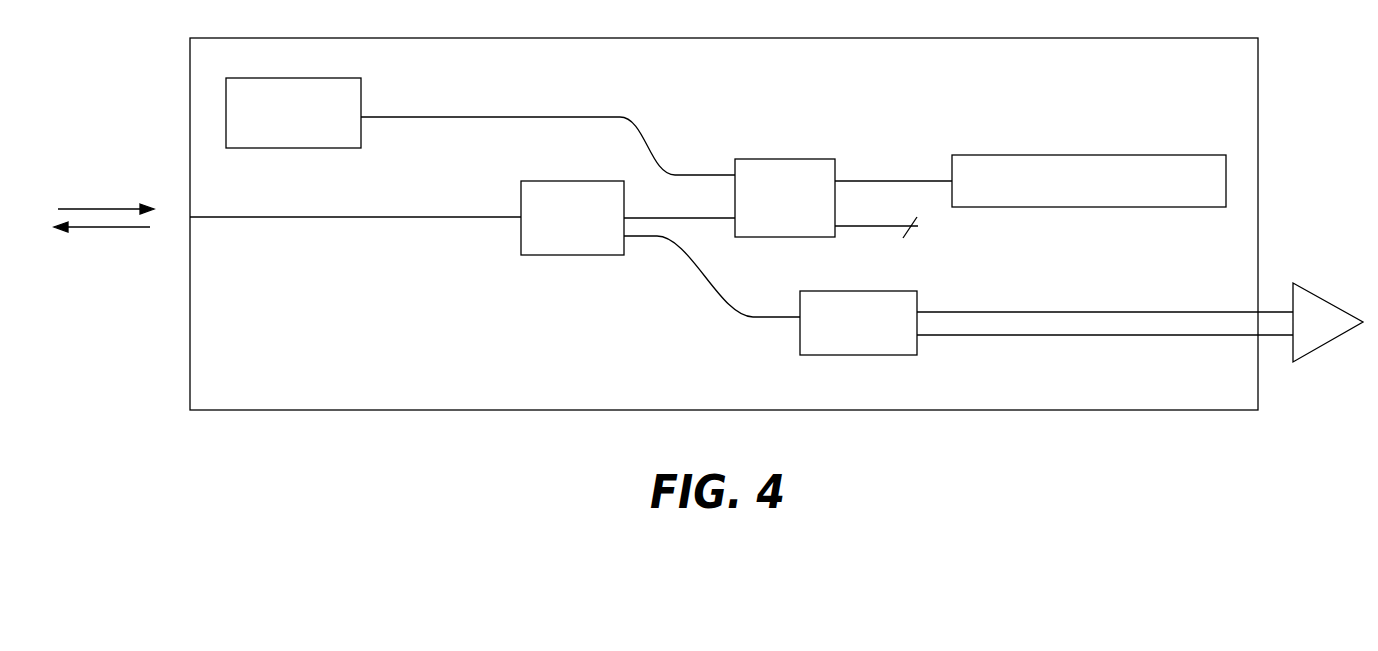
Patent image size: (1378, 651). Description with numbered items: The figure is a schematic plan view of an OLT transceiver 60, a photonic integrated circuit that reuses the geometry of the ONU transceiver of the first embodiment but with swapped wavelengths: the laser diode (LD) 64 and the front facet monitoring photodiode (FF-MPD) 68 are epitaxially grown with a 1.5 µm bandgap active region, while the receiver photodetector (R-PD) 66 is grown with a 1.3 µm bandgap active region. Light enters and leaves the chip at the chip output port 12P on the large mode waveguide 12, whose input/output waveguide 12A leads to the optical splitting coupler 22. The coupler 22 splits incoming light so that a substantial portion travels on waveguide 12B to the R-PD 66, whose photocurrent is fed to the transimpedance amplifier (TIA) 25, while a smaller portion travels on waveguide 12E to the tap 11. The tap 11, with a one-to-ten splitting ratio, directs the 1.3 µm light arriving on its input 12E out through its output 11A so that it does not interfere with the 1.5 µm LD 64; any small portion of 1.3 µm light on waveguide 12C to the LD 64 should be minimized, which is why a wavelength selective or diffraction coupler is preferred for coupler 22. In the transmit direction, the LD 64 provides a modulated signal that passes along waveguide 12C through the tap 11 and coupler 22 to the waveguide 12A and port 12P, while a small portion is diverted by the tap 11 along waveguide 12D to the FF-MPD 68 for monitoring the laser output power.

The OLT transceiver 60 is at (724, 224).
The chip output port 12P is at (190, 217).
The input/output waveguide 12A is at (295, 218).
The large mode waveguide 12 is at (432, 218).
The front facet monitoring photodiode (FF-MPD) 68 is at (282, 78).
The waveguide to FF-MPD 12D is at (512, 117).
The optical splitting coupler 22 is at (545, 193).
The coupler output waveguide (tap input) 12E is at (642, 217).
The receiver waveguide 12B is at (713, 290).
The tap (splitting coupler) 11 is at (773, 167).
The waveguide to LD 12C is at (862, 180).
The tap output port 11A is at (880, 226).
The laser diode (LD) 64 is at (1008, 153).
The receiver photodetector (R-PD) 66 is at (810, 302).
The transimpedance amplifier (TIA) 25 is at (1300, 297).